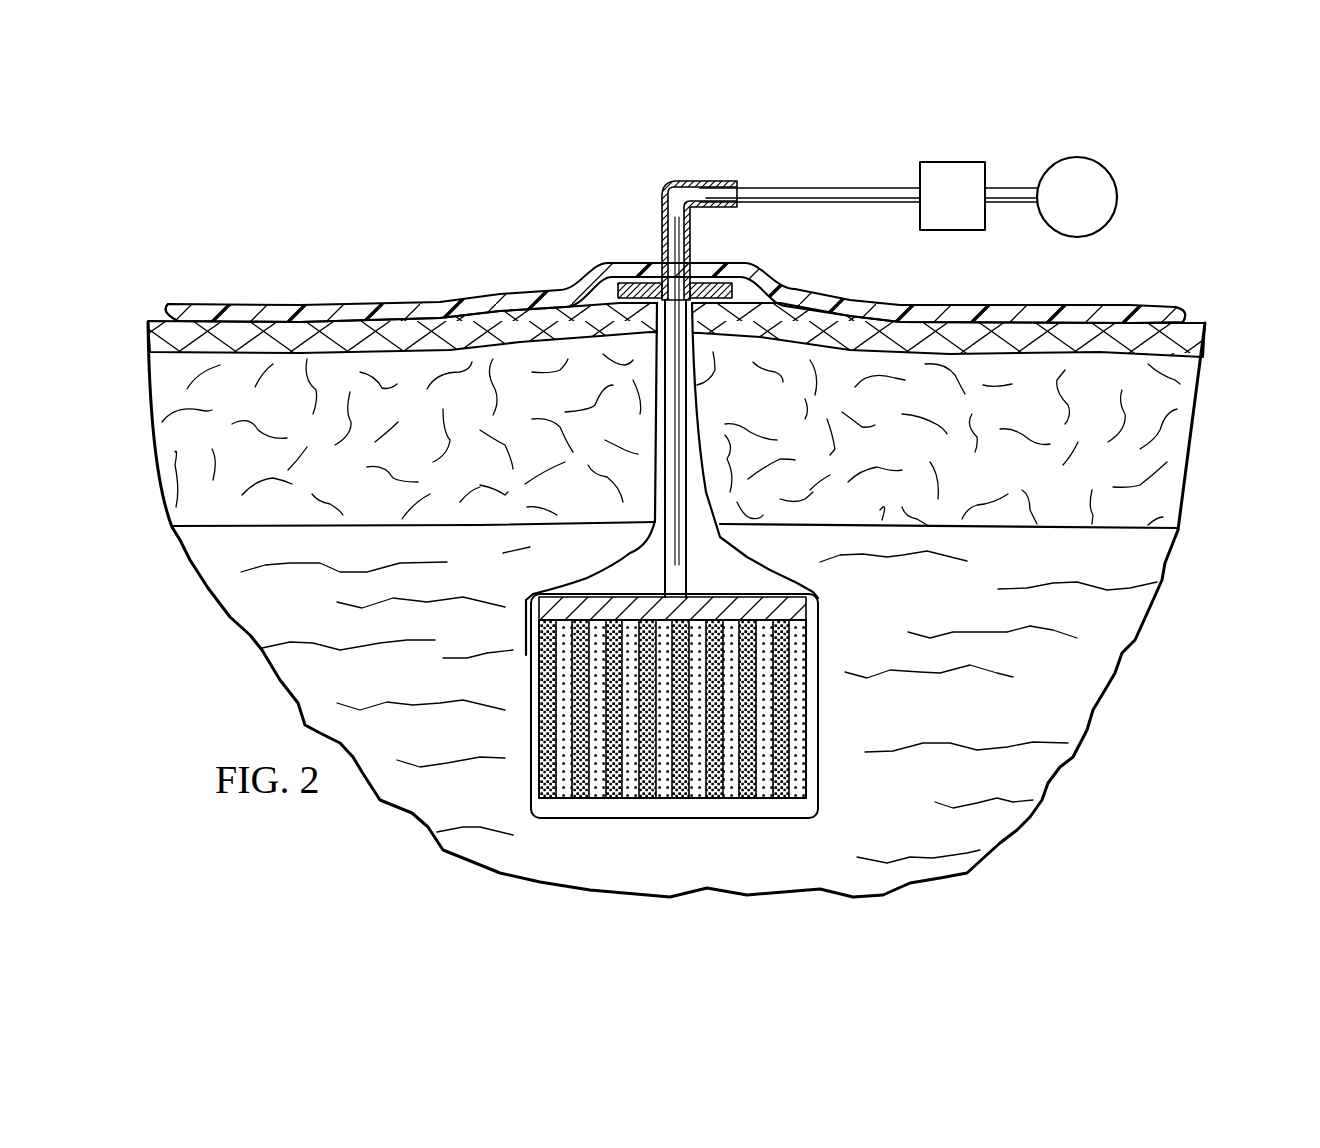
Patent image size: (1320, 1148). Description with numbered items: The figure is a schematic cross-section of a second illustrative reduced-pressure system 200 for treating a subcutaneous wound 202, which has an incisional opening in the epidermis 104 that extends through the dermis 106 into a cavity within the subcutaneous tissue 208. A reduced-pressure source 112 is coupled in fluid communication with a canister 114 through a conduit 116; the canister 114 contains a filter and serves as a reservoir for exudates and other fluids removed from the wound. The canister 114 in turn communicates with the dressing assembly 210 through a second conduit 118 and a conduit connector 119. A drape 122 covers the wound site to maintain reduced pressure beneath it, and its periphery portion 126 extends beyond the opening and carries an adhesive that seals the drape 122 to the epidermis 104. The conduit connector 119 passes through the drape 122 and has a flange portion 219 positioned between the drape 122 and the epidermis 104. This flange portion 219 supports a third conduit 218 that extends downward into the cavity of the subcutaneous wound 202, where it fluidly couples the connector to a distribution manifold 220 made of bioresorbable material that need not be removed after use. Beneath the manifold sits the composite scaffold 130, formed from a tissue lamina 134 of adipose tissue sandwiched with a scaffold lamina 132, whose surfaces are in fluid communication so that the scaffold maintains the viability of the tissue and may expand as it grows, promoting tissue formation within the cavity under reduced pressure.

The reduced-pressure system 200 is at (346, 133).
The dressing assembly 210 is at (361, 231).
The conduit connector 119 is at (667, 183).
The second conduit 118 is at (853, 188).
The canister 114 is at (954, 162).
The conduit 116 is at (1013, 188).
The reduced-pressure source 112 is at (1076, 157).
The drape 122 is at (522, 300).
The periphery portion 126 is at (240, 306).
The flange portion 219 is at (742, 280).
The epidermis 104 is at (1205, 334).
The dermis 106 is at (1185, 448).
The third conduit 218 is at (683, 409).
The distribution manifold 220 is at (702, 595).
The subcutaneous tissue 208 is at (1075, 700).
The composite scaffold 130 is at (672, 747).
The scaffold lamina 132 is at (651, 800).
The tissue lamina 134 is at (697, 803).
The subcutaneous wound 202 is at (778, 810).